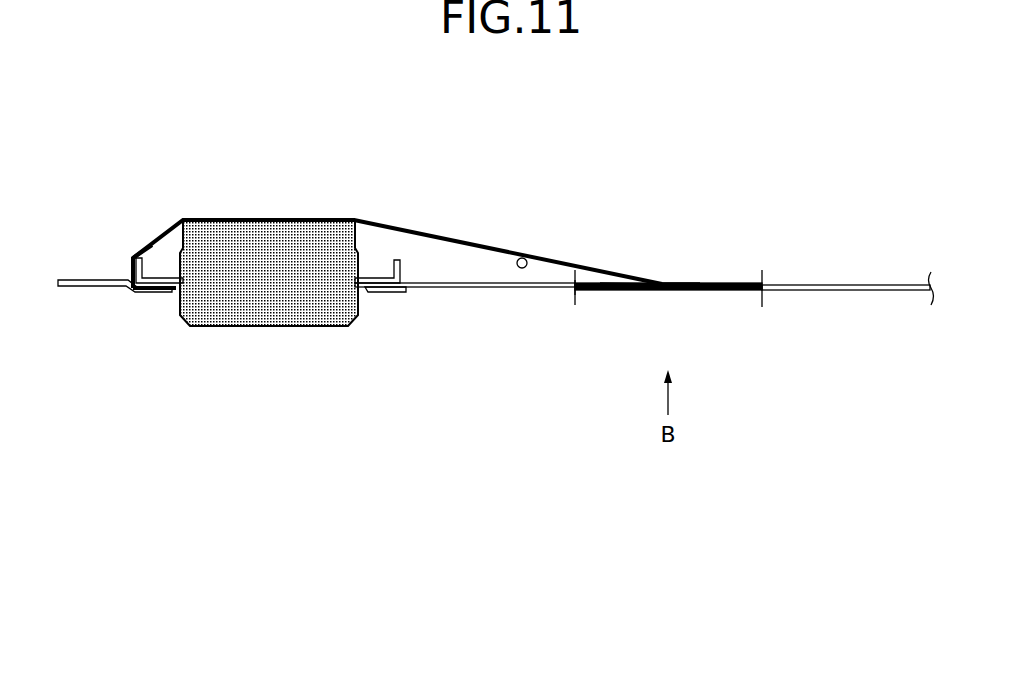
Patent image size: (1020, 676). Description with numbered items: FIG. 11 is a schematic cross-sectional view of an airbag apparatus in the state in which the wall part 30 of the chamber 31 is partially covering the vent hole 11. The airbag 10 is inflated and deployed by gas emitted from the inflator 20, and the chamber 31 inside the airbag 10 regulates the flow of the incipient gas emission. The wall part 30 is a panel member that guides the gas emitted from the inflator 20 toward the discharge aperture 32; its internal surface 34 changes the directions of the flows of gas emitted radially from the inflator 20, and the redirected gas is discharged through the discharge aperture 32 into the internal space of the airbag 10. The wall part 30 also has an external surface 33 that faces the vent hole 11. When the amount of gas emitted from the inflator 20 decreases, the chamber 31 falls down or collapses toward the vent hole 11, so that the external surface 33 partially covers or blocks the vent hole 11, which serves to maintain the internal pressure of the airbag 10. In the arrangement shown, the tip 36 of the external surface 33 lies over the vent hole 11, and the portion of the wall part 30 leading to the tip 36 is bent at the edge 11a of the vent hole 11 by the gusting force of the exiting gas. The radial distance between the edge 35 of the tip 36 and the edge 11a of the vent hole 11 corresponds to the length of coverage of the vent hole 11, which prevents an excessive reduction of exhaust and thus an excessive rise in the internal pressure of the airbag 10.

The airbag 10 is at (840, 289).
The vent hole 11 is at (762, 232).
The edge of the vent hole 11a is at (578, 293).
The inflator 20 is at (313, 307).
The wall part 30 is at (400, 227).
The chamber 31 is at (462, 195).
The discharge aperture 32 is at (467, 267).
The external surface 33 is at (637, 291).
The internal surface 34 is at (527, 258).
The edge of the tip 35 is at (661, 284).
The tip 36 is at (630, 265).